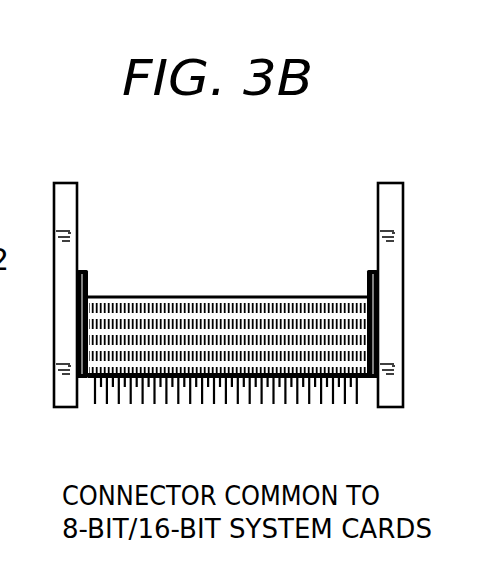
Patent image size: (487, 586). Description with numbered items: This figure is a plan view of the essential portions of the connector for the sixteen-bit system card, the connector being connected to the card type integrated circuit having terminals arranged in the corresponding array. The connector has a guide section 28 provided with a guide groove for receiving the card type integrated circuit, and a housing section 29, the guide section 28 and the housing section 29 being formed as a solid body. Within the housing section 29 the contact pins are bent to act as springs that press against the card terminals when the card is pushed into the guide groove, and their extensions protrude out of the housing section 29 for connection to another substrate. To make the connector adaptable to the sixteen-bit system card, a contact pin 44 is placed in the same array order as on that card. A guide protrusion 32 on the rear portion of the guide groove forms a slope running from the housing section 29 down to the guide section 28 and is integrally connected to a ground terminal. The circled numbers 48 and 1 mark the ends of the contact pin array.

The guide section 28 is at (403, 213).
The housing section 29 is at (363, 323).
The guide protrusion 32 is at (57, 338).
The contact pin No. 44 is at (363, 395).
The pin position 48 is at (346, 422).
The pin position 1 is at (362, 424).